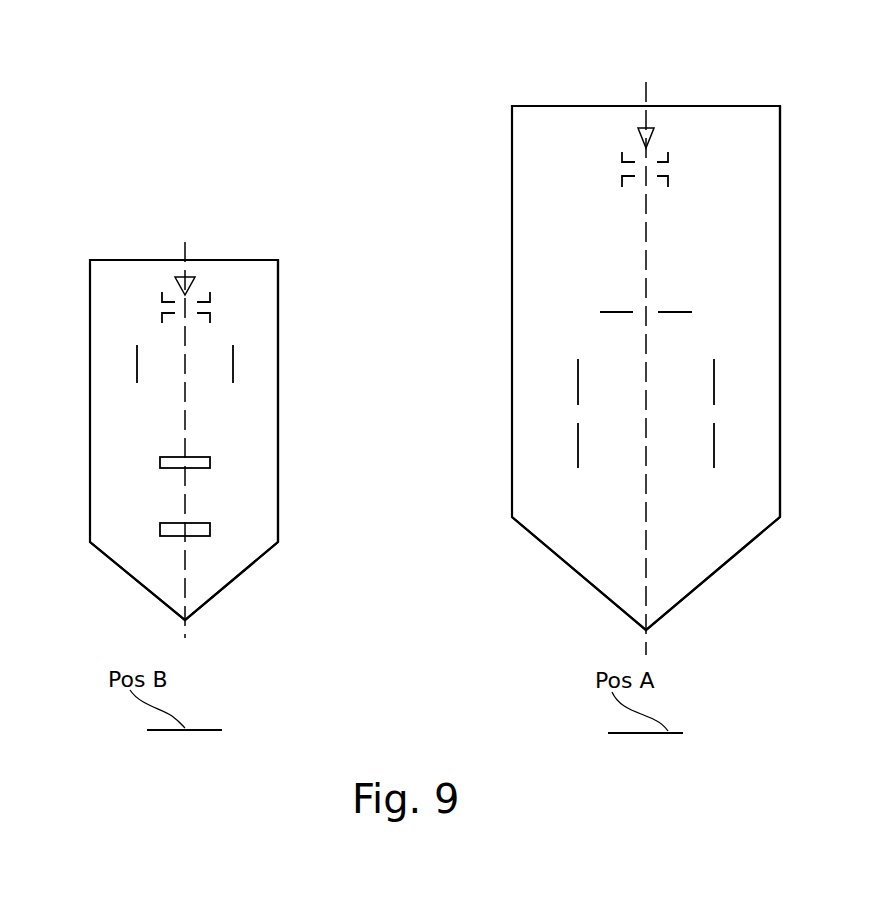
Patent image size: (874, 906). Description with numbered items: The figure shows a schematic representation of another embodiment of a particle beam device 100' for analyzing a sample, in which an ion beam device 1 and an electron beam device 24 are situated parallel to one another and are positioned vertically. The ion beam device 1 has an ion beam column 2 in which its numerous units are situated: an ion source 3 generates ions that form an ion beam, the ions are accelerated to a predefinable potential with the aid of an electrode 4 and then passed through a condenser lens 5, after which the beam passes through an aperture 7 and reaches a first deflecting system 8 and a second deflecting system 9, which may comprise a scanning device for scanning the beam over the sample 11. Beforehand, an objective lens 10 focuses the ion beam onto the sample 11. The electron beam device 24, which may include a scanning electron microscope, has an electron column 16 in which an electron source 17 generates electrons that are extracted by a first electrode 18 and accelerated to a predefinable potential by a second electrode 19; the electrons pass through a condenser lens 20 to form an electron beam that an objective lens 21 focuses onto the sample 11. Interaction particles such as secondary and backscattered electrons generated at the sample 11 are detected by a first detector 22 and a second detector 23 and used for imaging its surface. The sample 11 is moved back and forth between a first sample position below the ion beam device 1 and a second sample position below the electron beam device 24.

The particle beam device 100' is at (184, 342).
The ion beam device 1 is at (808, 92).
The ion beam column 2 is at (780, 158).
The ion source 3 is at (644, 127).
The electrode 4 is at (668, 156).
The condenser lens 5 is at (668, 183).
The aperture 7 is at (675, 310).
The first deflecting system 8 is at (714, 378).
The second deflecting system 9 is at (714, 448).
The objective lens 10 is at (728, 550).
The sample 11 is at (176, 732).
The electron column 16 is at (278, 309).
The electron source 17 is at (183, 276).
The first electrode 18 is at (160, 294).
The second electrode 19 is at (160, 317).
The condenser lens 20 is at (233, 363).
The objective lens 21 is at (138, 582).
The first detector 22 is at (210, 463).
The second detector 23 is at (160, 528).
The electron beam device 24 is at (296, 238).